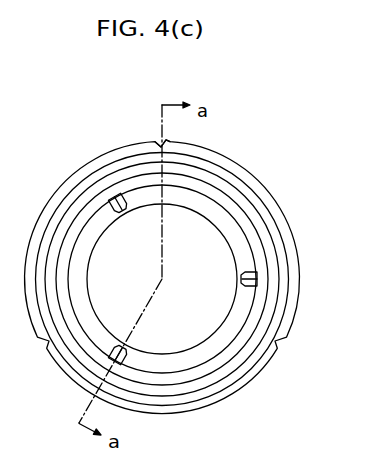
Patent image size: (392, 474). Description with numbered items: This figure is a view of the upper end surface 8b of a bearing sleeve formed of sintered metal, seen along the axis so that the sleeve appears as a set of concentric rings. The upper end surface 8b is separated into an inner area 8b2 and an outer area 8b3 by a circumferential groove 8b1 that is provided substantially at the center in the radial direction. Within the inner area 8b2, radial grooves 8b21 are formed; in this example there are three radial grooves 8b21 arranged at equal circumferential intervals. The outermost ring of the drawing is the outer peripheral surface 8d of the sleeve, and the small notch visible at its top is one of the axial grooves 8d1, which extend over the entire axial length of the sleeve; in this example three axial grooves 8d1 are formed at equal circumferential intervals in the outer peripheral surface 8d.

The upper end surface 8b is at (193, 249).
The circumferential groove 8b1 is at (232, 193).
The inner area 8b2 is at (193, 245).
The outer area 8b3 is at (280, 240).
The radial grooves 8b21 is at (118, 193).
The outer peripheral surface 8d is at (152, 253).
The axial grooves 8d1 is at (160, 146).